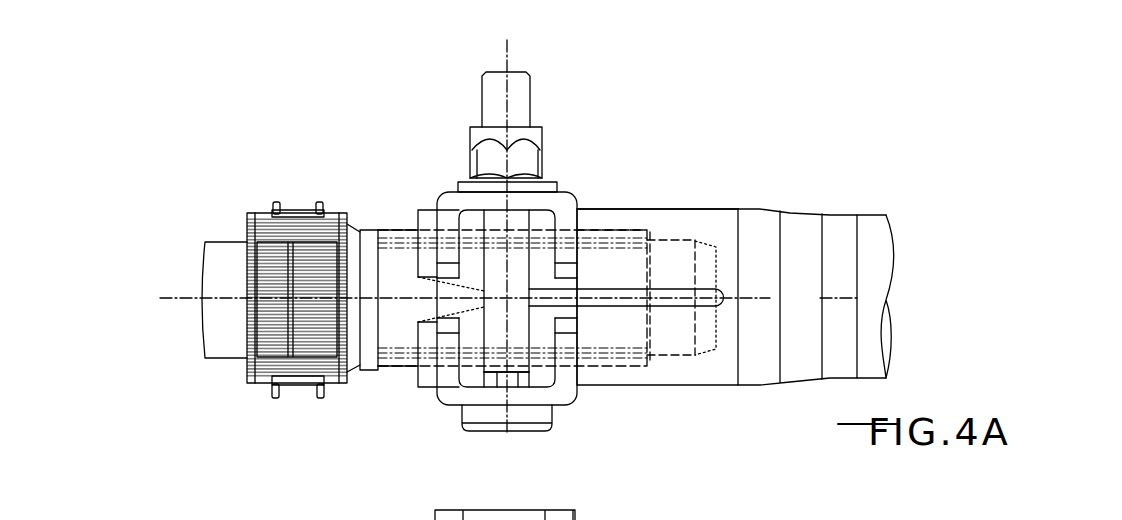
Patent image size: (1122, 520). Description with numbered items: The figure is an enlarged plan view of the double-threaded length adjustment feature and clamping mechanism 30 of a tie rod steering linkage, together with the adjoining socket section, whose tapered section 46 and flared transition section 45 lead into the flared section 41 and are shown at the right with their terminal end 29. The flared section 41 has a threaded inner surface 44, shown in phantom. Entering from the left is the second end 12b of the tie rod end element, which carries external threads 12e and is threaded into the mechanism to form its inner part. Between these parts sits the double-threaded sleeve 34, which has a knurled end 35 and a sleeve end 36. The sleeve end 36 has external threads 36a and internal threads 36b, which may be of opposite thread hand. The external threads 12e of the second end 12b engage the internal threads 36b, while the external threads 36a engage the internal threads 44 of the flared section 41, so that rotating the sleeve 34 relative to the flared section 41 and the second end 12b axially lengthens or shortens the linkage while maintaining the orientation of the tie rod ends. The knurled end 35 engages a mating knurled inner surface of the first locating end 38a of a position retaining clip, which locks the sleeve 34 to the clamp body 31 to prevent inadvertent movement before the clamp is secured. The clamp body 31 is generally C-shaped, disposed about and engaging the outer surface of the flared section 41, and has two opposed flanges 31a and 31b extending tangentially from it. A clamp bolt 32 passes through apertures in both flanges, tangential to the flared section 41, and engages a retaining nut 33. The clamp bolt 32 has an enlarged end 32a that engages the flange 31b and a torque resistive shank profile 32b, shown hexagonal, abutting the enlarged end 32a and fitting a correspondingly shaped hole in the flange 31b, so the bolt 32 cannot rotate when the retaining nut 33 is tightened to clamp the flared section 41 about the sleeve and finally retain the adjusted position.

The double-threaded length adjustment feature and clamping mechanism 30 is at (893, 147).
The shaft end 29 is at (837, 227).
The second end of tie rod end element 12b is at (215, 318).
The external threads 12e is at (677, 237).
The clamp body 31 is at (410, 519).
The flange 31a is at (455, 207).
The flange 31b is at (452, 388).
The clamp bolt 32 is at (520, 92).
The enlarged end 32a is at (517, 418).
The torque resistive shank profile 32b is at (523, 380).
The retaining nut 33 is at (532, 155).
The double-threaded sleeve 34 is at (262, 388).
The knurled end 35 is at (255, 217).
The sleeve end 36 is at (366, 232).
The external threads 36a is at (612, 234).
The internal threads 36b is at (648, 236).
The first locating end 38a is at (320, 398).
The flared section 41 is at (668, 386).
The threaded inner surface 44 is at (625, 229).
The flared transition section 45 is at (758, 380).
The tapered section 46 is at (803, 367).